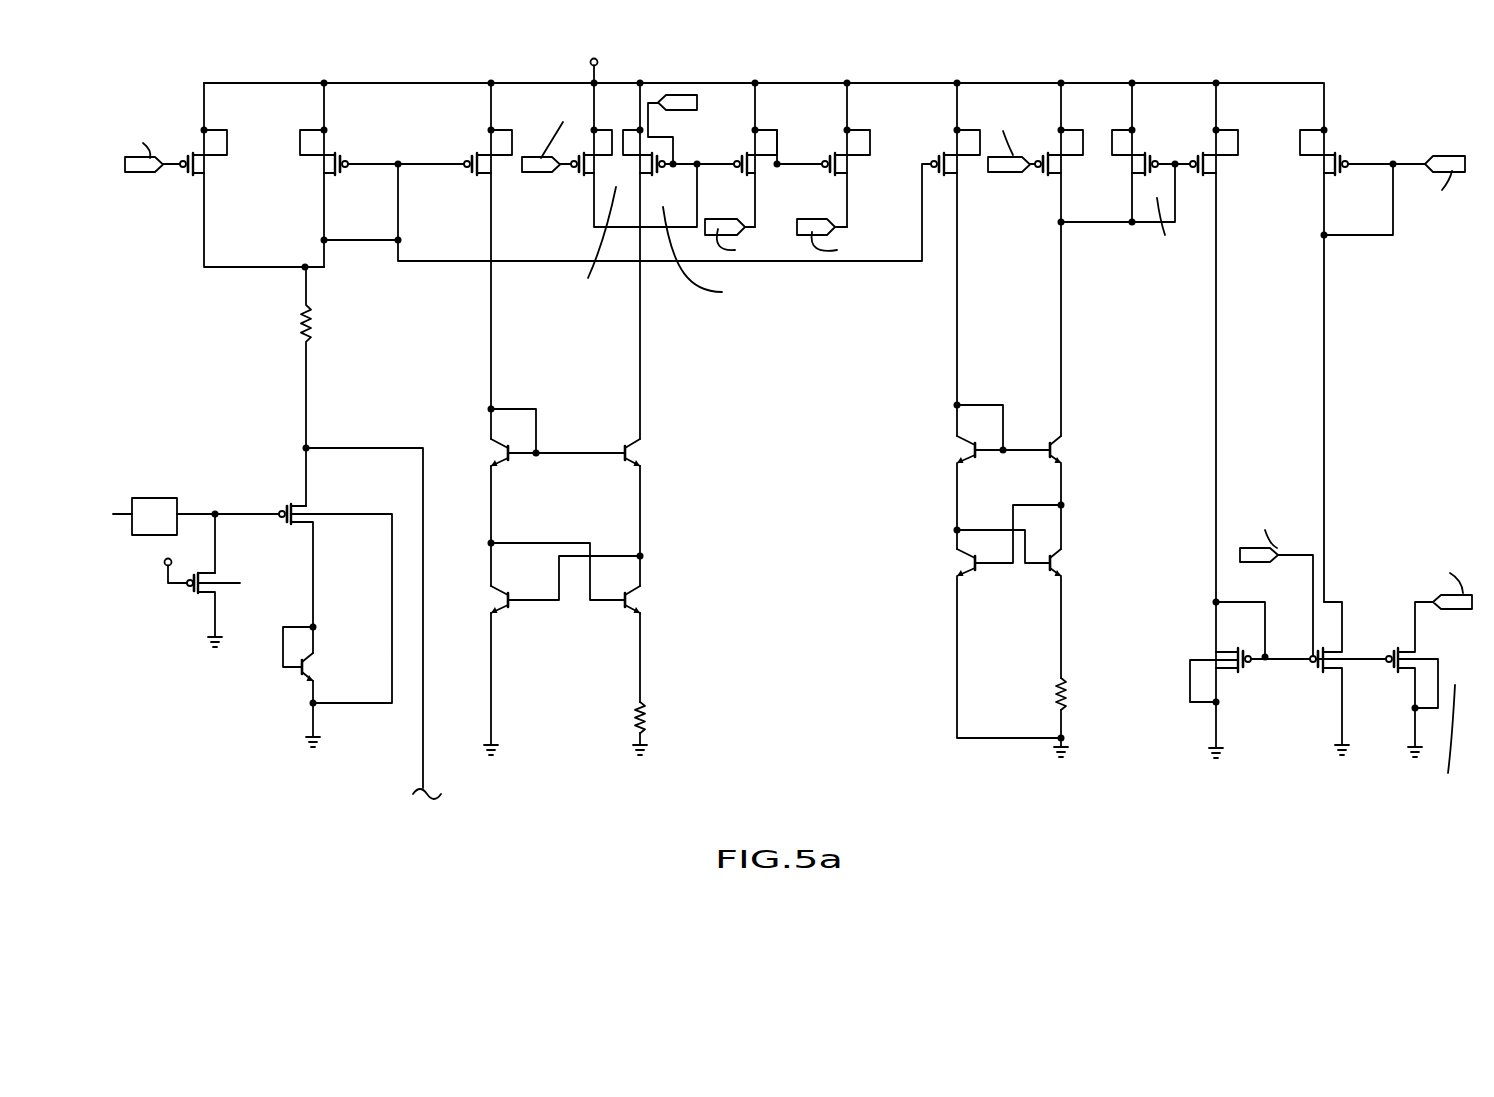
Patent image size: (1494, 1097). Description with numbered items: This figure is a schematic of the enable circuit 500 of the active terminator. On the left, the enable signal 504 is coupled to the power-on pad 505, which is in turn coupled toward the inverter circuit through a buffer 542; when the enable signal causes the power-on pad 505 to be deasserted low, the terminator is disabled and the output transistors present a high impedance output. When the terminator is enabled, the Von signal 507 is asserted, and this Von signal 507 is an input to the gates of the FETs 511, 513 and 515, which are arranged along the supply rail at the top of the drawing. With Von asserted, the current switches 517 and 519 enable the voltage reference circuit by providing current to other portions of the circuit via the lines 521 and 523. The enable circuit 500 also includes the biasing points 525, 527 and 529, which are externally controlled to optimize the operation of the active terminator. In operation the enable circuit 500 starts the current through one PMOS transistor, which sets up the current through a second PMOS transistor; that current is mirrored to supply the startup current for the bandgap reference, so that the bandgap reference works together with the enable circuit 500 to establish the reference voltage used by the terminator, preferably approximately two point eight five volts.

The enable circuit 500 is at (792, 444).
The enable signal 504 is at (122, 520).
The power-on pad 505 is at (170, 500).
The Von signal 507 is at (142, 174).
The FET 511 is at (215, 128).
The FET 513 is at (594, 129).
The FET 515 is at (963, 125).
The current switch 517 is at (862, 127).
The current switch 519 is at (760, 130).
The line 521 is at (724, 222).
The line 523 is at (803, 235).
The biasing point 525 is at (1442, 153).
The biasing point 527 is at (1433, 603).
The biasing point 529 is at (1276, 549).
The buffer 542 is at (233, 685).